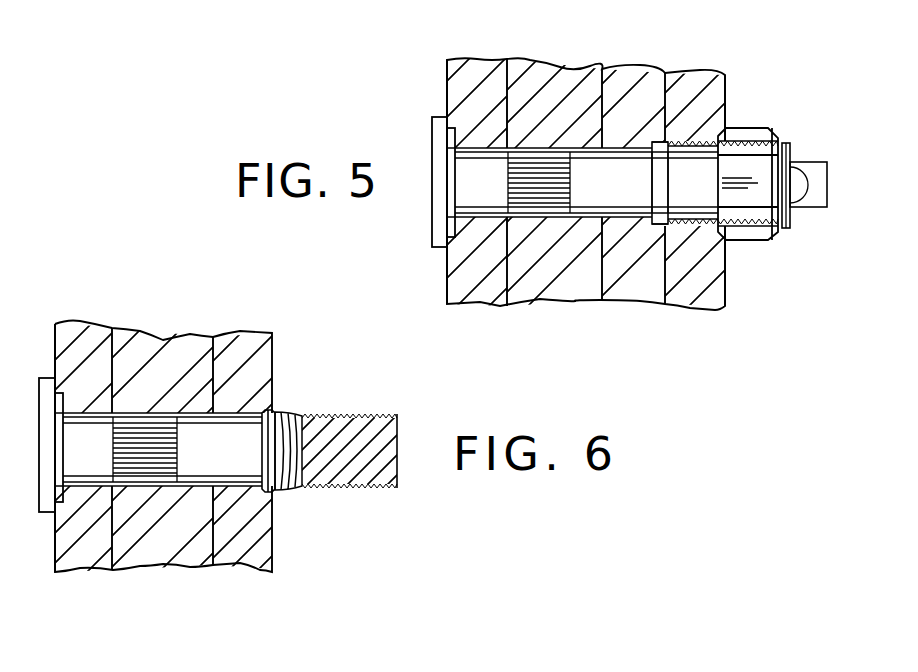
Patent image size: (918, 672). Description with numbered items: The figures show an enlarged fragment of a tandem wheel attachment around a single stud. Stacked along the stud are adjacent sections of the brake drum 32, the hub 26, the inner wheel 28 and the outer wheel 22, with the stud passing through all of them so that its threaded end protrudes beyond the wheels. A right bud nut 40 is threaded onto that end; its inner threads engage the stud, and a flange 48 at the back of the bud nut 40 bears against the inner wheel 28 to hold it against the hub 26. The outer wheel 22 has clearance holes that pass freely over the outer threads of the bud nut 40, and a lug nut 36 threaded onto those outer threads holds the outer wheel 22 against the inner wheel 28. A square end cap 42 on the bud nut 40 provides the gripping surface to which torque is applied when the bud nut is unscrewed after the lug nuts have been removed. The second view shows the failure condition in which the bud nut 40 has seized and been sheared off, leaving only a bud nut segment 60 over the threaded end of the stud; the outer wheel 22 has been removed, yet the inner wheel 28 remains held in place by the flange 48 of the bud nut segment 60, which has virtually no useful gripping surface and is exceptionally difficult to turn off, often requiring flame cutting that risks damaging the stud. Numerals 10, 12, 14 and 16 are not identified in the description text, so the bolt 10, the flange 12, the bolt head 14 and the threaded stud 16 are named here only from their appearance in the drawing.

In FIG. 5, the fastener bolt 10 is at (622, 165).
In FIG. 6, the fastener bolt 10 is at (207, 458).
In FIG. 5, the flange 12 is at (440, 130).
In FIG. 5, the bolt head 14 is at (450, 207).
In FIG. 6, the threaded stud 16 is at (345, 420).
In FIG. 5, the outer wheel 22 is at (712, 296).
In FIG. 5, the hub 26 is at (550, 296).
In FIG. 6, the hub 26 is at (140, 335).
In FIG. 5, the inner wheel 28 is at (626, 296).
In FIG. 6, the inner wheel 28 is at (236, 338).
In FIG. 5, the brake drum 32 is at (482, 296).
In FIG. 6, the brake drum 32 is at (78, 335).
In FIG. 5, the lug nut 36 is at (768, 232).
In FIG. 5, the right bud nut 40 is at (786, 142).
In FIG. 5, the square end cap 42 is at (818, 197).
In FIG. 5, the flange 48 is at (665, 140).
In FIG. 6, the flange 48 is at (280, 410).
In FIG. 6, the bud nut segment 60 is at (292, 490).